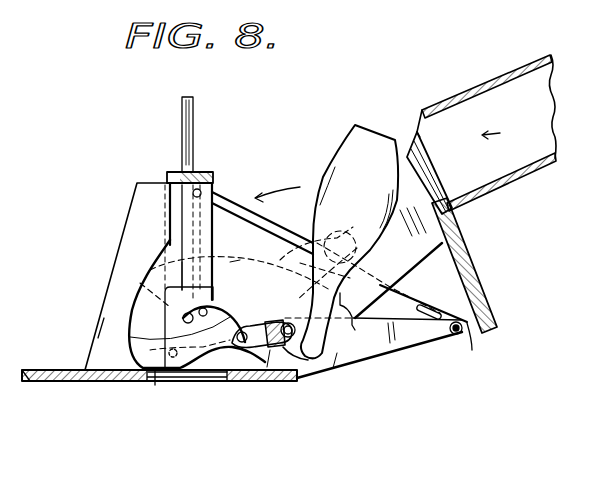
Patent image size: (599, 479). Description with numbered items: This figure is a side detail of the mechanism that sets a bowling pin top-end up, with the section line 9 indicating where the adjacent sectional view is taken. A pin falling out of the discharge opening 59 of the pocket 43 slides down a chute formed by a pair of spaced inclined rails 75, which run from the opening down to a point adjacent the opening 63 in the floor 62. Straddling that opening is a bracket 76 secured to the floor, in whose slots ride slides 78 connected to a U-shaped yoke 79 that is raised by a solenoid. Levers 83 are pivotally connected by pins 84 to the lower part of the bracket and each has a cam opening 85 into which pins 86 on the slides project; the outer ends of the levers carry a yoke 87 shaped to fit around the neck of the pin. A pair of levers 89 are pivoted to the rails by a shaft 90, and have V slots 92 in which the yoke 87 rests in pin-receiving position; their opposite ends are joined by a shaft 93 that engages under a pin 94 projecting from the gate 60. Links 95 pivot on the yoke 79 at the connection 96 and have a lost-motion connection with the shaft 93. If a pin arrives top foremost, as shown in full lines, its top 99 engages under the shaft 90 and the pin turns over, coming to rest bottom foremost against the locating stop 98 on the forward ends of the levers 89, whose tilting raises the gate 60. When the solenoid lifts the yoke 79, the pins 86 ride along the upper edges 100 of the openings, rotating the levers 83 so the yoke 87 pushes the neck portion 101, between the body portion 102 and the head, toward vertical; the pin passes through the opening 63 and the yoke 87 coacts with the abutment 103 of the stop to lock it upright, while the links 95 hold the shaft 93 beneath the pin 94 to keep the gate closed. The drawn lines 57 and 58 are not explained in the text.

The section line 9- 9 is at (187, 68).
The pocket 43 is at (498, 80).
The reflector arm 57 is at (365, 150).
The frame side member 58 is at (418, 137).
The discharge opening 59 is at (427, 183).
The gate 60 is at (470, 253).
The floor 62 is at (53, 381).
The opening 63 is at (155, 385).
The inclined rails 75 is at (407, 273).
The bracket 76 is at (185, 262).
The slides 78 is at (232, 262).
The U-shaped yoke 79 is at (202, 172).
The levers 83 is at (220, 360).
The pins 84 is at (147, 387).
The cam opening 85 is at (200, 360).
The pins 86 is at (98, 338).
The yoke 87 is at (283, 360).
The levers 89 is at (407, 347).
The shaft 90 is at (267, 367).
The V slots 92 is at (277, 360).
The shaft 93 is at (462, 347).
The pin 94 is at (472, 350).
The links 95 is at (228, 200).
The pivotal connection 96 is at (217, 182).
The locating stop 98 is at (140, 288).
The top of the pin 99 is at (337, 353).
The upper edges 100 is at (213, 292).
The neck portion 101 is at (352, 325).
The body portion 102 is at (340, 160).
The abutment 103 is at (167, 232).